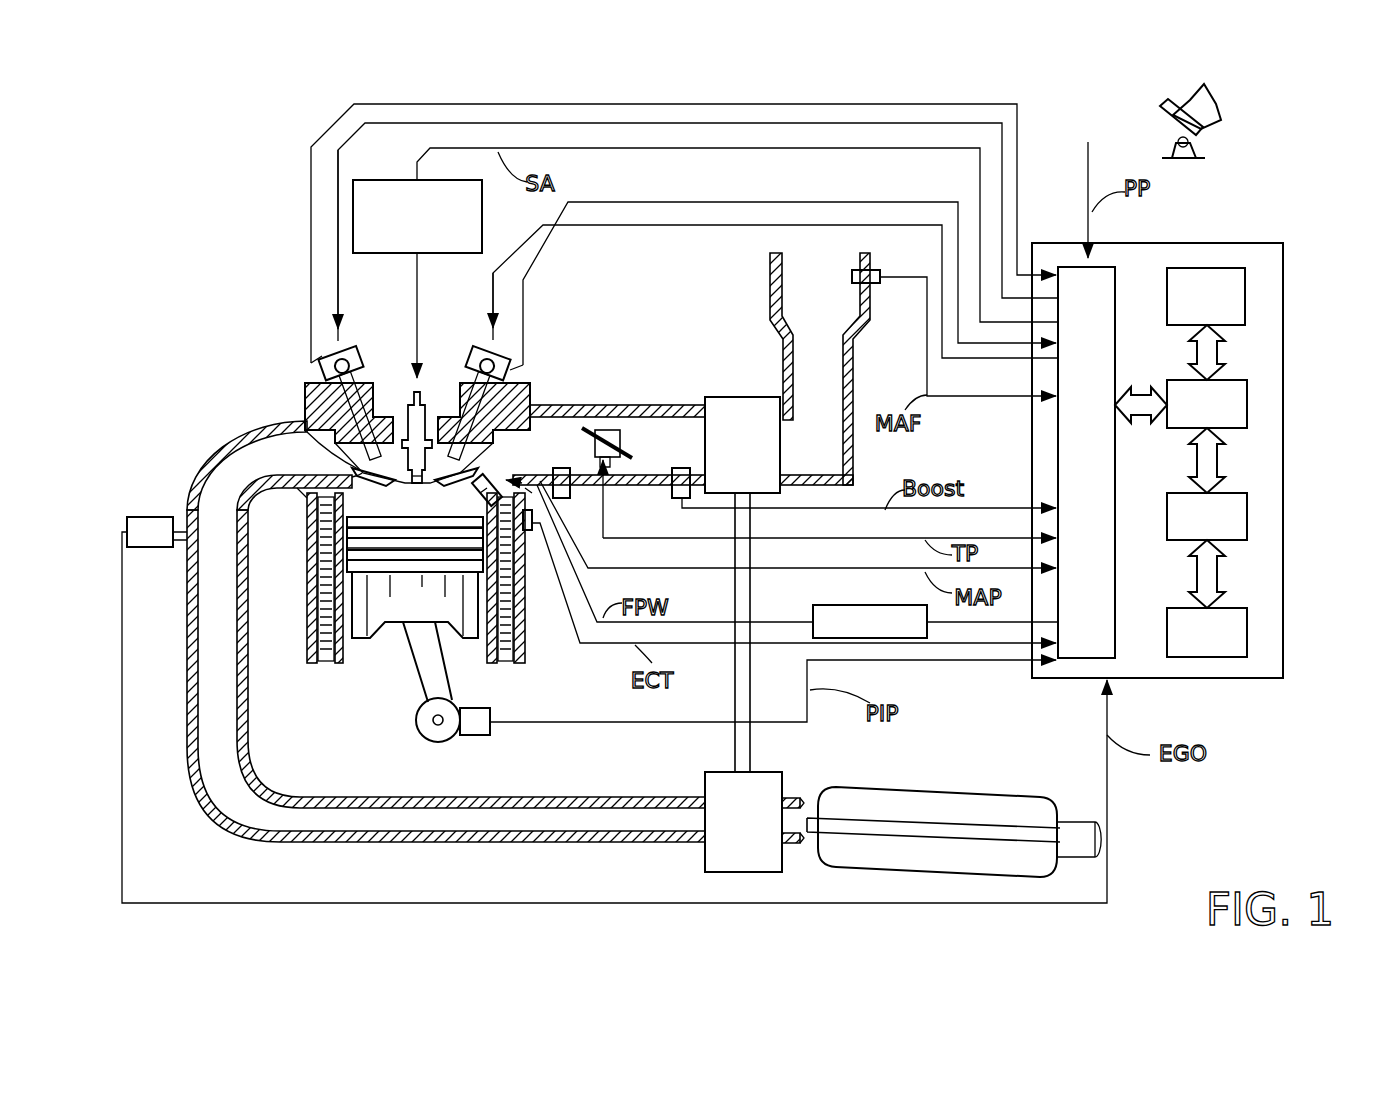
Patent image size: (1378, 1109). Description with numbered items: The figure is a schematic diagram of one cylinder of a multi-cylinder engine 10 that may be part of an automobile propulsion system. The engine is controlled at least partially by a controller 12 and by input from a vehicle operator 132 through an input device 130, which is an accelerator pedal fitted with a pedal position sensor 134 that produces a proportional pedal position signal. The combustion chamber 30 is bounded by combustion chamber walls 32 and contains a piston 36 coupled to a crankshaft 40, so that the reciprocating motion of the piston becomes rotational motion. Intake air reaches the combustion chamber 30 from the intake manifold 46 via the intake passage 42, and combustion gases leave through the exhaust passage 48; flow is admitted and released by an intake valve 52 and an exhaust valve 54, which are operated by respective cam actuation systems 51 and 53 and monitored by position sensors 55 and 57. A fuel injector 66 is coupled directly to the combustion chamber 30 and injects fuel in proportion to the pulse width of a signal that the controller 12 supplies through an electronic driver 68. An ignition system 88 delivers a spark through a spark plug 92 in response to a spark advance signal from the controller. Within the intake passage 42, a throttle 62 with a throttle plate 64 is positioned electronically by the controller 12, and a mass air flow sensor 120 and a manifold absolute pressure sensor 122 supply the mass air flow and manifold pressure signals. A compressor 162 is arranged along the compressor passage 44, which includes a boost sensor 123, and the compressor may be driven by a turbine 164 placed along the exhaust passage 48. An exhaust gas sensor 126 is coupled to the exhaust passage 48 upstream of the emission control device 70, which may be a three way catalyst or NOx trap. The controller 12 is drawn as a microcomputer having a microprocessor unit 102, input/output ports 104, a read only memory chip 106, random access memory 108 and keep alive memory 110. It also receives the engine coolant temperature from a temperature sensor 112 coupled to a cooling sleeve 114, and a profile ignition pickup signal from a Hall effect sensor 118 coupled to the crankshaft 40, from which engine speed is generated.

The engine 10 is at (230, 335).
The controller 12 is at (1255, 243).
The combustion chamber 30 is at (413, 497).
The combustion chamber walls 32 is at (350, 652).
The piston 36 is at (395, 607).
The crankshaft 40 is at (432, 742).
The intake passage 42 is at (820, 369).
The compressor passage 44 is at (752, 457).
The intake manifold 46 is at (609, 445).
The exhaust passage 48 is at (446, 631).
The cam actuation system 51 is at (483, 357).
The intake valve 52 is at (447, 453).
The cam actuation system 53 is at (343, 350).
The exhaust valve 54 is at (305, 420).
The position sensor 55 is at (508, 370).
The position sensor 57 is at (322, 372).
The throttle 62 is at (607, 430).
The throttle plate 64 is at (585, 428).
The fuel injector 66 is at (492, 480).
The electronic driver 68 is at (847, 605).
The emission control device 70 is at (1020, 790).
The ignition system 88 is at (375, 180).
The spark plug 92 is at (413, 427).
The microprocessor unit 102 is at (1247, 396).
The input/output ports 104 is at (1113, 278).
The read only memory chip 106 is at (1245, 292).
The random access memory 108 is at (1247, 515).
The keep alive memory 110 is at (1247, 630).
The temperature sensor 112 is at (532, 532).
The cooling sleeve 114 is at (522, 660).
The Hall effect sensor 118 is at (478, 738).
The mass air flow sensor 120 is at (885, 267).
The manifold absolute pressure sensor 122 is at (562, 498).
The boost sensor 123 is at (676, 498).
The exhaust gas sensor 126 is at (127, 525).
The input device 130 is at (1160, 112).
The vehicle operator 132 is at (1212, 104).
The pedal position sensor 134 is at (1208, 142).
The compressor 162 is at (722, 397).
The turbine 164 is at (703, 855).